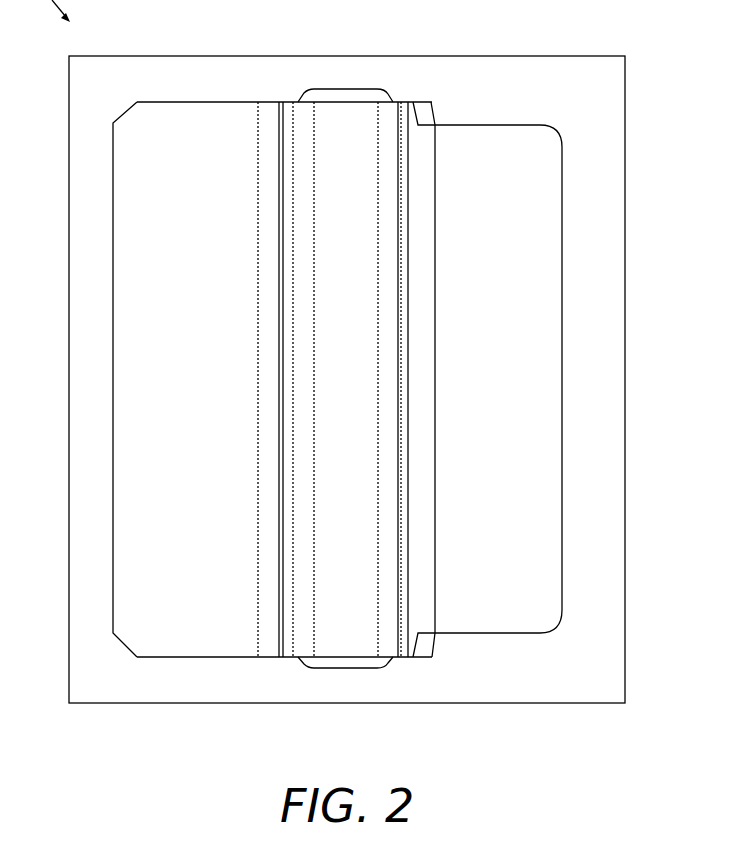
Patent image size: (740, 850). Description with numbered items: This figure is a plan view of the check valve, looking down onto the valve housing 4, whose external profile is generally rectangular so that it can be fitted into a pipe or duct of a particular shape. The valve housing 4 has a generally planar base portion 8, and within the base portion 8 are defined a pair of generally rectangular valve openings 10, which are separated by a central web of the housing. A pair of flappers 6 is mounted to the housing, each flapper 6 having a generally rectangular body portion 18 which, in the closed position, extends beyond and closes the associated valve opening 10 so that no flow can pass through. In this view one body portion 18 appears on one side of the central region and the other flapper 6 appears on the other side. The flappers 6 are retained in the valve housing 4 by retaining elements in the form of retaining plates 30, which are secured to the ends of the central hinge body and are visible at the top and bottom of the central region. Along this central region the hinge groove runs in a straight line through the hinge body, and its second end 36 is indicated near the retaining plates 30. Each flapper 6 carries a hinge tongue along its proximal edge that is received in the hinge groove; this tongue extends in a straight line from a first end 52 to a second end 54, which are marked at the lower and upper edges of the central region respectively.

The valve housing 4 is at (616, 682).
The flapper 6 is at (155, 515).
The base portion 8 is at (607, 484).
The valve opening 10 is at (538, 392).
The body portion 18 is at (155, 392).
The retaining plate 30 is at (345, 89).
The second end of hinge groove 36 is at (384, 100).
The first end of hinge tongue 52 is at (265, 658).
The second end of hinge tongue 54 is at (266, 102).